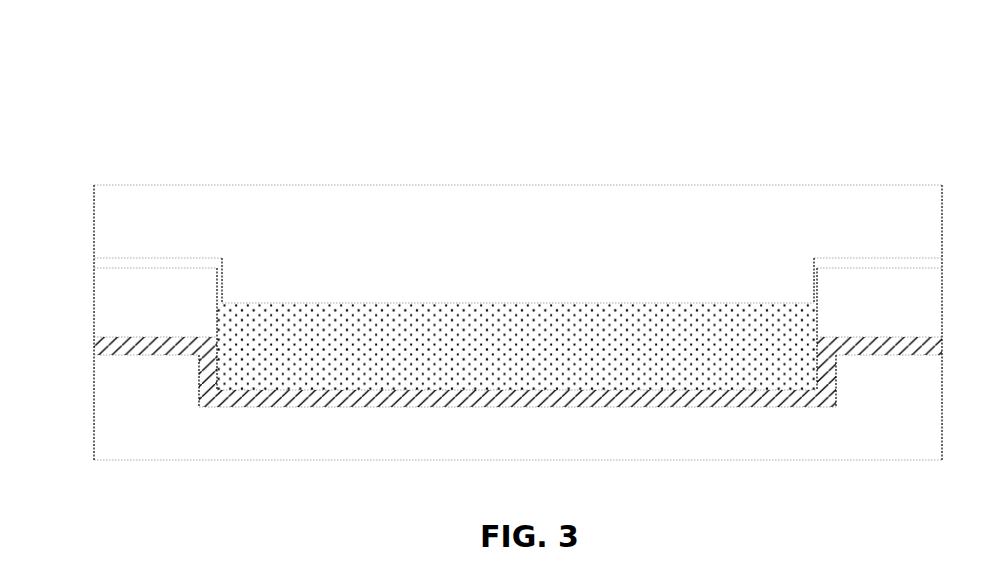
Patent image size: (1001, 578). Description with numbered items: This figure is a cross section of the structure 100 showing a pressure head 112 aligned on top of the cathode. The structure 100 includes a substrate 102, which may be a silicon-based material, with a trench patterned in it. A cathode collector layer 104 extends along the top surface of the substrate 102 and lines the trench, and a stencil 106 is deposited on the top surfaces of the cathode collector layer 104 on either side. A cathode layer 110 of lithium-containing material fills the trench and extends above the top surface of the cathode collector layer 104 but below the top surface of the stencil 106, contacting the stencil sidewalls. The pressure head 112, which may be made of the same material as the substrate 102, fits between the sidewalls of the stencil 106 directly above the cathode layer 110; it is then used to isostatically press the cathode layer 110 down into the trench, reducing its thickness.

The structure 100 is at (139, 39).
The substrate 102 is at (929, 448).
The cathode collector layer 104 is at (96, 344).
The stencil 106 is at (143, 320).
The cathode layer 110 is at (802, 373).
The pressure head 112 is at (925, 235).